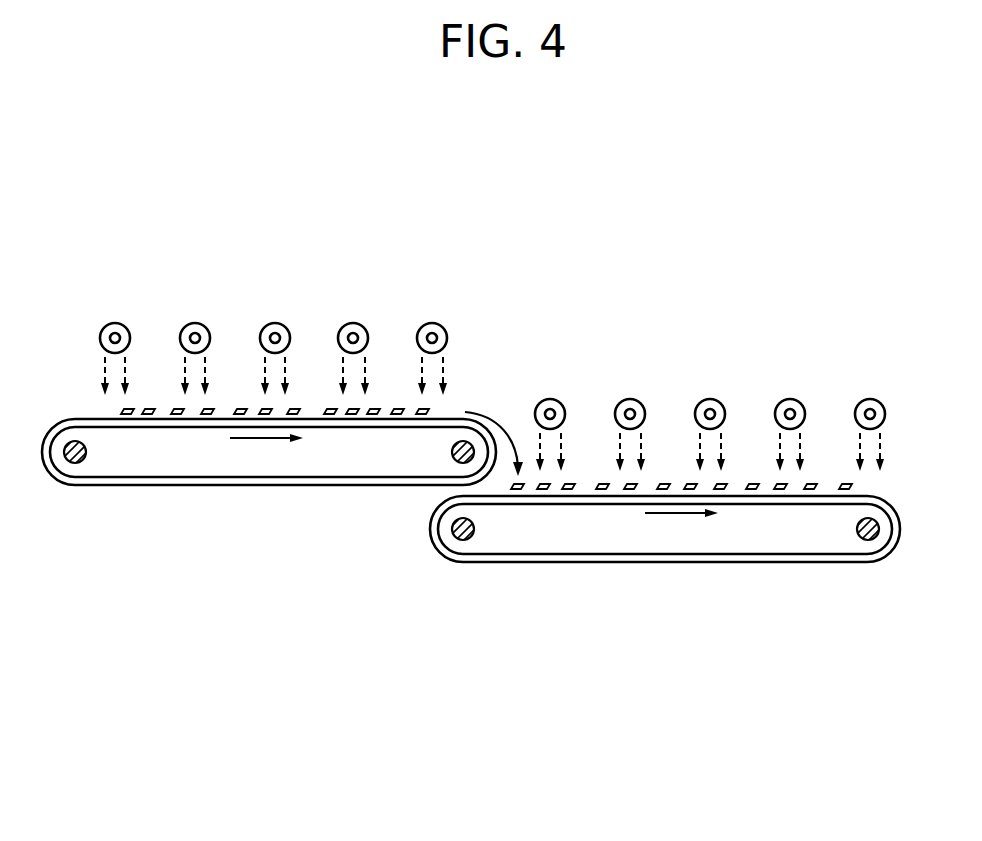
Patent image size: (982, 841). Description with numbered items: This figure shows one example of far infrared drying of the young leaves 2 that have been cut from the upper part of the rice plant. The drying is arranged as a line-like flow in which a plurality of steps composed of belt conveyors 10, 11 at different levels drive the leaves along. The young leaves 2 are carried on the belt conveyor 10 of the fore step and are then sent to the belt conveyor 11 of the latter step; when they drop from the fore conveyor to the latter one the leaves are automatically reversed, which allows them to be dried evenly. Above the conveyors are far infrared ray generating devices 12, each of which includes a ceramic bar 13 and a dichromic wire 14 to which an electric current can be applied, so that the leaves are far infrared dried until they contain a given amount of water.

The young leaves 2 is at (176, 412).
The belt conveyor 10 is at (199, 500).
The belt conveyor 11 is at (617, 578).
The far infrared ray generating device 12 is at (368, 331).
The ceramic bar 13 is at (549, 400).
The dichromic wire 14 is at (563, 410).